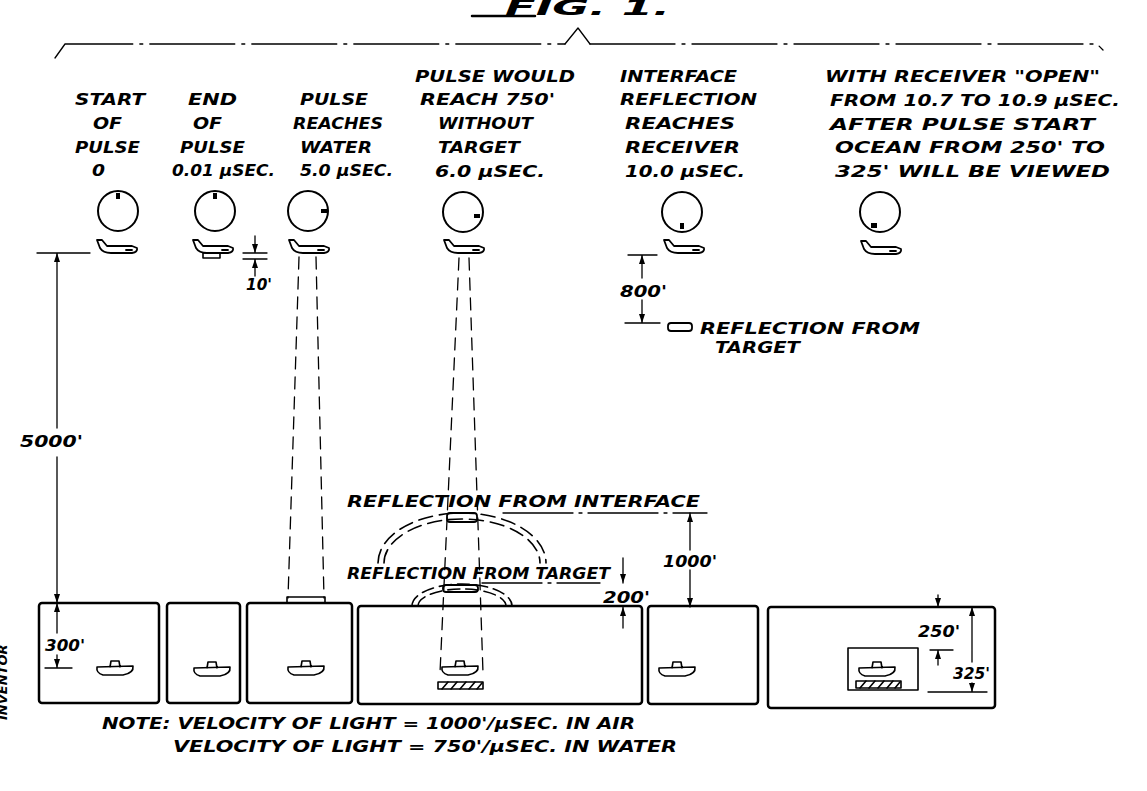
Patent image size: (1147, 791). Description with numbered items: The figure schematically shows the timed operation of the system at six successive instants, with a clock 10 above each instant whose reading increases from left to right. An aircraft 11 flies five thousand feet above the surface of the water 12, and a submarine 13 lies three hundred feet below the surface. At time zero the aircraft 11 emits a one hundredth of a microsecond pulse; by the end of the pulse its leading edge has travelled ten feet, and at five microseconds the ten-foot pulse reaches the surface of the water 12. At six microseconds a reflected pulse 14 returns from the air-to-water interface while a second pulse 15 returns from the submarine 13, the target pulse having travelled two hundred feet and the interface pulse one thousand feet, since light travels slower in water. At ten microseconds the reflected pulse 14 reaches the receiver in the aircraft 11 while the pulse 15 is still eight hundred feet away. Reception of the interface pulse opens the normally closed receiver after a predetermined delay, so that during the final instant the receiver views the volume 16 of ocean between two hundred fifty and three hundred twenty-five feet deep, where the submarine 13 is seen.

The clock 10 is at (138, 211).
The aircraft 11 is at (112, 254).
The water 12 is at (140, 590).
The submarine 13 is at (125, 660).
The reflected pulse 14 is at (460, 523).
The second pulse 15 is at (460, 593).
The volume 16 is at (848, 662).